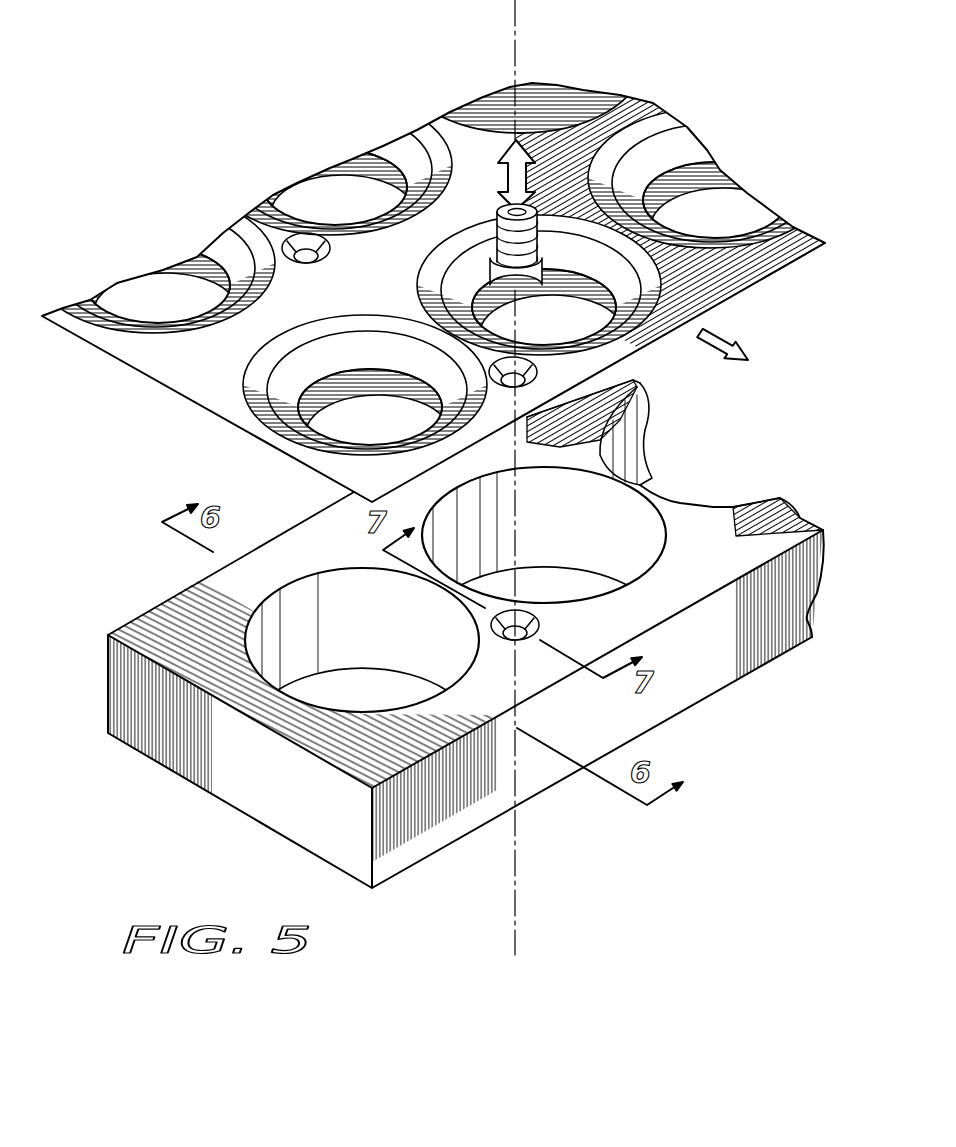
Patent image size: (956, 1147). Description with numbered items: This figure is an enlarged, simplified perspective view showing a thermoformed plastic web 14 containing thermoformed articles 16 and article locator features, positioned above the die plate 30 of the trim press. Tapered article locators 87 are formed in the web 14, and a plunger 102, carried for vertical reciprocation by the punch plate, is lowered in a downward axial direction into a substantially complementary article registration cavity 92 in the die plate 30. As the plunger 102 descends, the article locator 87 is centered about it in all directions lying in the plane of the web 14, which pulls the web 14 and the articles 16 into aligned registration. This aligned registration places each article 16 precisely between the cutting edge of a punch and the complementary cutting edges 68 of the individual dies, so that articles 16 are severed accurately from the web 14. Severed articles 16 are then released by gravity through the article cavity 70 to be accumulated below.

The web 14 is at (191, 374).
The articles 16 is at (433, 273).
The plunger 102 is at (484, 234).
The article locator 87 is at (538, 372).
The die plate 30 is at (150, 598).
The cutting edges 68 is at (532, 472).
The article cavity 70 is at (625, 545).
The article registration cavity 92 is at (540, 618).